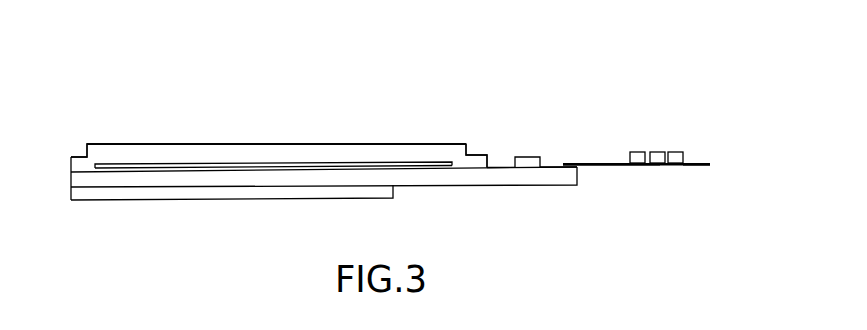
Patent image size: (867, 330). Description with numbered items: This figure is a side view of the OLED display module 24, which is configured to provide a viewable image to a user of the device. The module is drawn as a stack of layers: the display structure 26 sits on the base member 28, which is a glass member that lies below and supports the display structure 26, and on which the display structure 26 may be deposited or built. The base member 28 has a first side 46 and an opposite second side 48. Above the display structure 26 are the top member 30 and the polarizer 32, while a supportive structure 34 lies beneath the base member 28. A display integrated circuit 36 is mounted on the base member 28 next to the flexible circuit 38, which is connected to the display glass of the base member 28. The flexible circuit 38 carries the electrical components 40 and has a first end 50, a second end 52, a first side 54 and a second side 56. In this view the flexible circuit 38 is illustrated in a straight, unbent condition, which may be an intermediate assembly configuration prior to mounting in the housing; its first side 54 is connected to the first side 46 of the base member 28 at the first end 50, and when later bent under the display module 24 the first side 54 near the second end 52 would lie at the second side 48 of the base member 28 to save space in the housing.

The display module 24 is at (138, 88).
The display structure 26 is at (103, 161).
The base member 28 is at (97, 177).
The top member 30 is at (247, 162).
The polarizer 32 is at (392, 144).
The supportive structure 34 is at (362, 192).
The display integrated circuit 36 is at (531, 163).
The flexible circuit 38 is at (620, 166).
The electrical components 40 is at (677, 152).
The first side 46 is at (496, 164).
The second side 48 is at (500, 184).
The first end 50 is at (558, 165).
The second end 52 is at (707, 166).
The first side 54 is at (586, 167).
The second side 56 is at (698, 162).